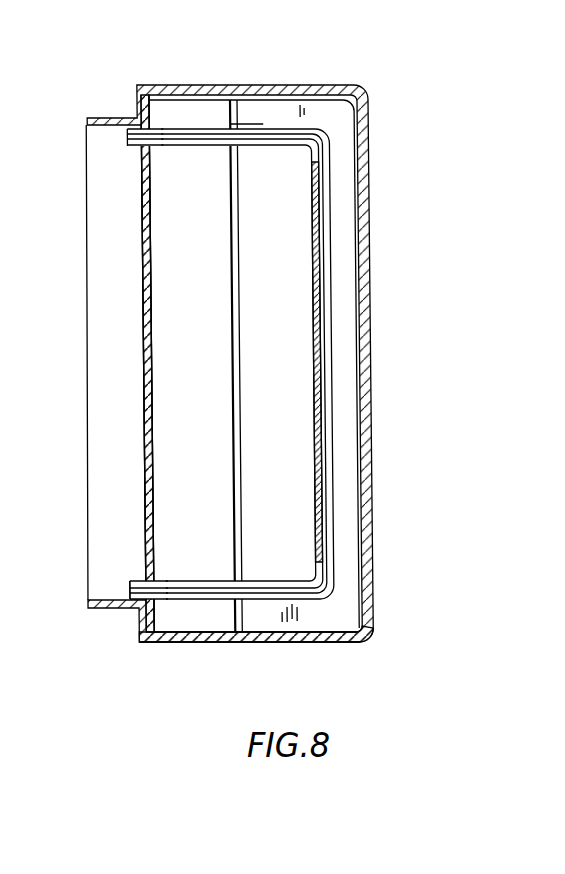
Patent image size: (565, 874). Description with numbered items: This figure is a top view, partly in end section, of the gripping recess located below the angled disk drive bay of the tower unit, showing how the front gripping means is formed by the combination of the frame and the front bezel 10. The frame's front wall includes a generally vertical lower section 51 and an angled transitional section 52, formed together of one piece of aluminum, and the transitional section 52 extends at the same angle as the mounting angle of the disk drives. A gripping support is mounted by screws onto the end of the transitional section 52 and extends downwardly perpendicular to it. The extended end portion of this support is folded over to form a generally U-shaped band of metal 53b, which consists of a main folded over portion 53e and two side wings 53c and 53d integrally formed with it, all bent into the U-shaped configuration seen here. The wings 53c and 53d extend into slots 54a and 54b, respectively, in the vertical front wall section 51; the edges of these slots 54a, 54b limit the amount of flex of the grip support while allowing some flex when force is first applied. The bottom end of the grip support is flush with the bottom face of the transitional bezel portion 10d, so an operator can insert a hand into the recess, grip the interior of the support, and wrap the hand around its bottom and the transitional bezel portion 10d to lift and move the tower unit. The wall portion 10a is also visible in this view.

The front bezel 10 is at (232, 400).
The side wall of panel housing 10a is at (372, 426).
The transitional bezel portion 10d is at (318, 620).
The vertical lower section 51 is at (145, 423).
The transitional section 52 is at (313, 262).
The U-shaped band of metal 53b is at (65, 582).
The side wing 53c is at (191, 580).
The side wing 53d is at (200, 147).
The main folded over portion 53e is at (326, 350).
The slot 54a is at (143, 581).
The slot 54b is at (128, 146).